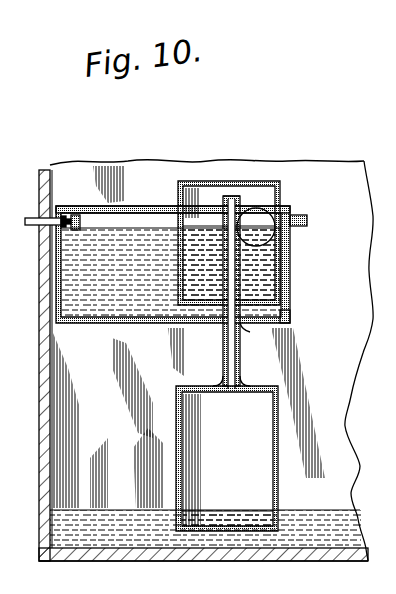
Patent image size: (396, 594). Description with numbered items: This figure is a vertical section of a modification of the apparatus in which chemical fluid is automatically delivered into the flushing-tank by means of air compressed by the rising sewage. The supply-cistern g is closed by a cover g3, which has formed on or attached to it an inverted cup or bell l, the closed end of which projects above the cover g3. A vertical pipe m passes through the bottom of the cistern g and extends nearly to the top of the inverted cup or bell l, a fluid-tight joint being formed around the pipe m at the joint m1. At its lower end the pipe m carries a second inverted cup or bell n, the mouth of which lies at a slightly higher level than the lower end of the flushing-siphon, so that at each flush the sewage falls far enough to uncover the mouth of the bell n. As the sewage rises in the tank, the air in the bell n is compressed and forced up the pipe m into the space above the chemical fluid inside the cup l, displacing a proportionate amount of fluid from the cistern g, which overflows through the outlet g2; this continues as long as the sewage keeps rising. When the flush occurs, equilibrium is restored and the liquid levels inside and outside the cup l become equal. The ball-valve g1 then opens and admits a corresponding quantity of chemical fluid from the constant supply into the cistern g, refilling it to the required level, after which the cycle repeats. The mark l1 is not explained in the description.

The supply-cistern g is at (173, 264).
The ball-valve g1 is at (67, 207).
The outlet g2 is at (299, 208).
The cover g3 is at (128, 201).
The inverted cup or bell l is at (234, 241).
The chamber opening l1 is at (282, 313).
The vertical pipe m is at (215, 336).
The fluid-tight joint m1 is at (242, 324).
The inverted cup or bell n is at (227, 458).